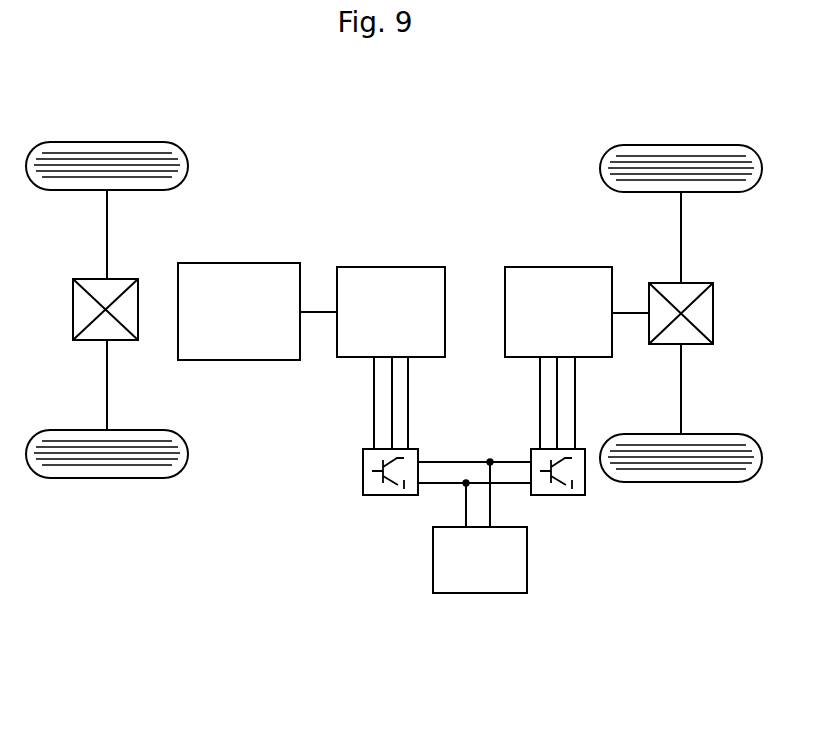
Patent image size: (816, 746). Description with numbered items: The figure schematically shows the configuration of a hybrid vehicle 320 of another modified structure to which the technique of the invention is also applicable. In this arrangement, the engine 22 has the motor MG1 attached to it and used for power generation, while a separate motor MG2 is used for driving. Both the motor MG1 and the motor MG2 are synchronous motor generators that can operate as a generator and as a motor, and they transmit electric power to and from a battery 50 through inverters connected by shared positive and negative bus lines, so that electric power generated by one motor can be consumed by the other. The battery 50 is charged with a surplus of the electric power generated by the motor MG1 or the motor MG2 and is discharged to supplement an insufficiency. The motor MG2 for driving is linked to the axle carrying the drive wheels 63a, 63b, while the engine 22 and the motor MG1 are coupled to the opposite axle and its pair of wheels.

The hybrid vehicle 320 is at (420, 132).
The engine 22 is at (236, 262).
The motor MG1 is at (386, 266).
The motor MG2 is at (558, 266).
The battery 50 is at (527, 561).
The drive wheel 63a is at (681, 143).
The drive wheel 63b is at (681, 483).